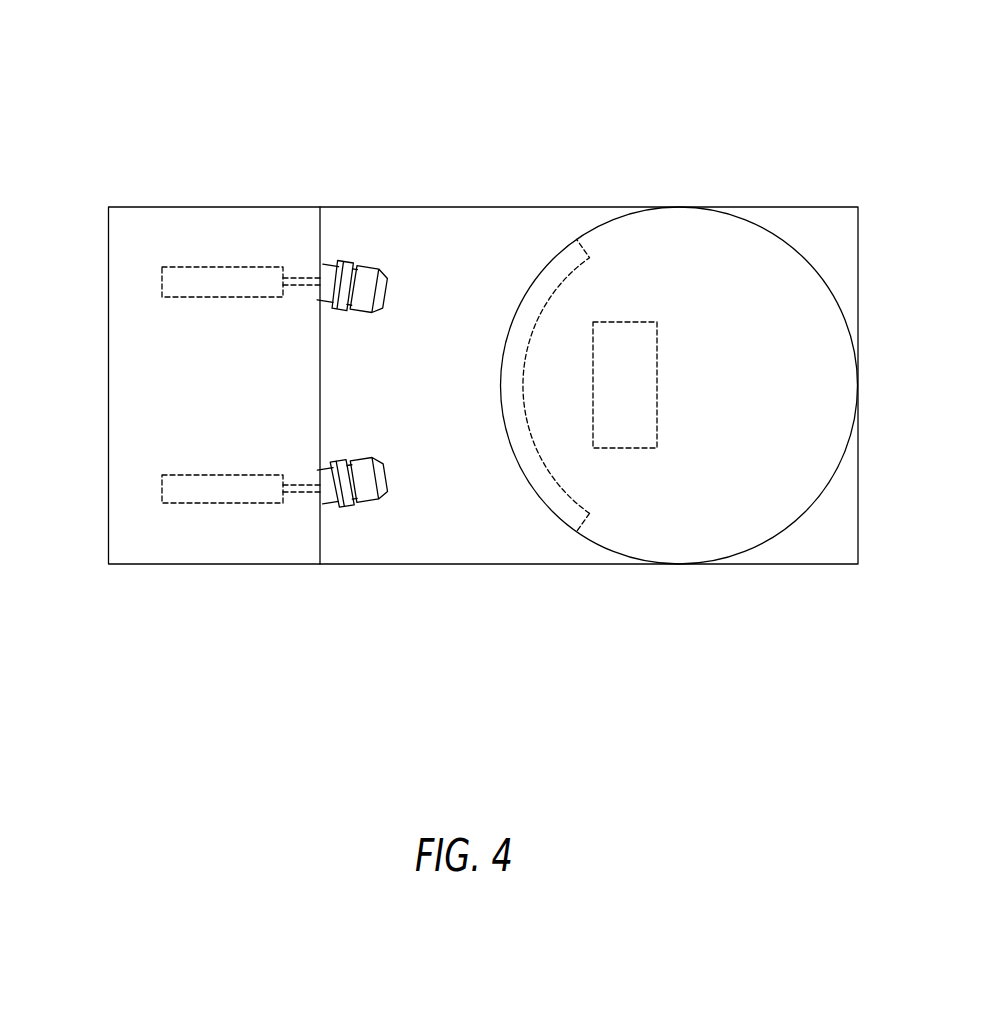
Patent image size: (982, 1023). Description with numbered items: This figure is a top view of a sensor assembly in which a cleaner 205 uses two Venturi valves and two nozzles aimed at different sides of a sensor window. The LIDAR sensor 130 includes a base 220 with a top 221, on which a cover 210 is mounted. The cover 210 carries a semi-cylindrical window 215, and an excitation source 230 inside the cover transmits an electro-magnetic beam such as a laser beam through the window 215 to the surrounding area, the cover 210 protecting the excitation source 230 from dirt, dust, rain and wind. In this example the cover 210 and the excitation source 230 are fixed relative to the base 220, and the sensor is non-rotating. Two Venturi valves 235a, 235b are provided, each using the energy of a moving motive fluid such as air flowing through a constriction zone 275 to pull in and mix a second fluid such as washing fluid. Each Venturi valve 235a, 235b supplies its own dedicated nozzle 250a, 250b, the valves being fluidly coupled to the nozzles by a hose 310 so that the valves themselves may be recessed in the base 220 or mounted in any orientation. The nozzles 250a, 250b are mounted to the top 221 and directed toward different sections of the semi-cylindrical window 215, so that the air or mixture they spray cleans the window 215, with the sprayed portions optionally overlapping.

The LIDAR sensor 130 is at (694, 143).
The cleaner 205 is at (447, 83).
The cover 210 is at (783, 238).
The window 215 is at (586, 264).
The base 220 is at (435, 206).
The top 221 is at (463, 519).
The excitation source 230 is at (657, 382).
The Venturi valve 235a is at (195, 503).
The Venturi valve 235b is at (198, 267).
The nozzle 250a is at (367, 508).
The nozzle 250b is at (368, 266).
The constriction zone 275 is at (302, 497).
The hose 310 is at (300, 287).